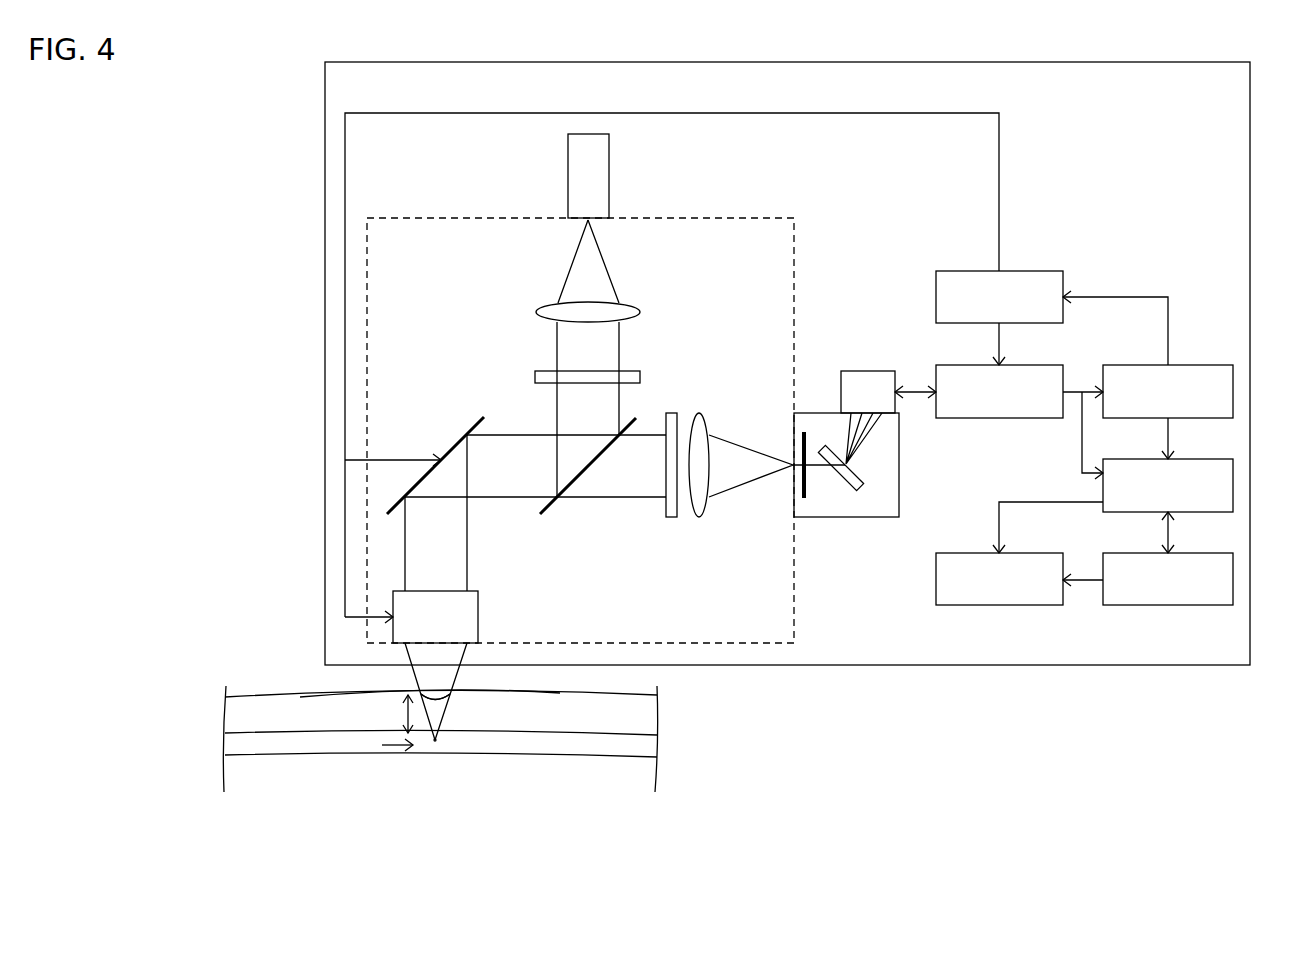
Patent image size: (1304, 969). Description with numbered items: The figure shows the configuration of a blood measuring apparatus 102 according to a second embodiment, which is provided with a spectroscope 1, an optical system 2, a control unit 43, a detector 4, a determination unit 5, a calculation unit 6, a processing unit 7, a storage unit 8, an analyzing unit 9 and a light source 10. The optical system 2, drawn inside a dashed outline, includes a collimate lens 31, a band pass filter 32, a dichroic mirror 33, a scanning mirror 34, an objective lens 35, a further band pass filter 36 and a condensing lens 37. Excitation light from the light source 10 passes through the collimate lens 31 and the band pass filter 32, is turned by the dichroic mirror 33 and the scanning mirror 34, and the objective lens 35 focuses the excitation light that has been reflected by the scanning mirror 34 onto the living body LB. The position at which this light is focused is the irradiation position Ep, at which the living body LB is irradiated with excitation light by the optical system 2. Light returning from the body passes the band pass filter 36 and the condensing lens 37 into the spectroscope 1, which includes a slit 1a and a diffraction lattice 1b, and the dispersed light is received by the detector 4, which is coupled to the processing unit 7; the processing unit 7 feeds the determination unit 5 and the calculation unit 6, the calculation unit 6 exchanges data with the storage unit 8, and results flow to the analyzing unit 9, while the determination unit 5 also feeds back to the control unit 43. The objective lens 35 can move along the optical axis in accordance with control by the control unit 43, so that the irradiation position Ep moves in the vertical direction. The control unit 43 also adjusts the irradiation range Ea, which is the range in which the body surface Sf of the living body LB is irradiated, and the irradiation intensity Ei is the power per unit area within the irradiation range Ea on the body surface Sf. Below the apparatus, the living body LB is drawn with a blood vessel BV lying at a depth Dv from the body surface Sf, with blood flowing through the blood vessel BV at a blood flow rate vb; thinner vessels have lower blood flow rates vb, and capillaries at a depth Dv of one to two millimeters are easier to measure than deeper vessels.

The blood measuring apparatus 102 is at (800, 62).
The optical system 2 is at (794, 257).
The light source 10 is at (568, 172).
The collimate lens 31 is at (536, 312).
The band pass filter 32 is at (535, 376).
The dichroic mirror 33 is at (548, 512).
The scanning mirror 34 is at (445, 446).
The objective lens 35 is at (478, 630).
The band pass filter 36 is at (672, 517).
The condensing lens 37 is at (699, 517).
The spectroscope 1 is at (899, 475).
The slit 1a is at (804, 498).
The diffraction lattice 1b is at (852, 490).
The detector 4 is at (868, 371).
The control unit 43 is at (1043, 271).
The processing unit 7 is at (1043, 365).
The determination unit 5 is at (1212, 365).
The calculation unit 6 is at (1212, 459).
The analyzing unit 9 is at (1043, 553).
The storage unit 8 is at (1212, 553).
The living body LB is at (250, 708).
The body surface Sf is at (302, 693).
The blood vessel BV is at (317, 755).
The irradiation intensity Ei is at (449, 686).
The irradiation range Ea is at (445, 697).
The irradiation position Ep is at (437, 742).
The depth Dv is at (395, 714).
The blood flow rate vb is at (386, 744).